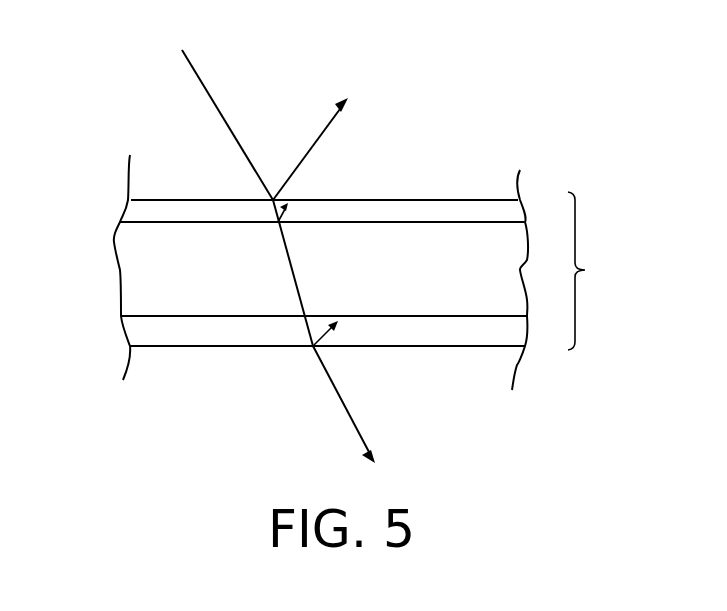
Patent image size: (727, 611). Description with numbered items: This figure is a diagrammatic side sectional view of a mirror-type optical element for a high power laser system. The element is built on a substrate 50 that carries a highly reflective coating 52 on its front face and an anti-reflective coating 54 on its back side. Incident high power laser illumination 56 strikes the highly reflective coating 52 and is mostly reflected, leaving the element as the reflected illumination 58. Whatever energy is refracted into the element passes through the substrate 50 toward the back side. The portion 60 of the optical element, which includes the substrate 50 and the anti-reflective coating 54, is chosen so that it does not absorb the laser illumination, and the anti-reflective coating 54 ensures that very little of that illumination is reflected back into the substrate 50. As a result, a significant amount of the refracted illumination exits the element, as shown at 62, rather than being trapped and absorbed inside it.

The substrate 50 is at (137, 275).
The highly reflective coating 52 is at (437, 212).
The anti-reflective coating 54 is at (442, 347).
The incident high power laser illumination 56 is at (217, 100).
The reflected illumination 58 is at (295, 171).
The portion of the optical element 60 is at (598, 271).
The exited illumination 62 is at (338, 398).